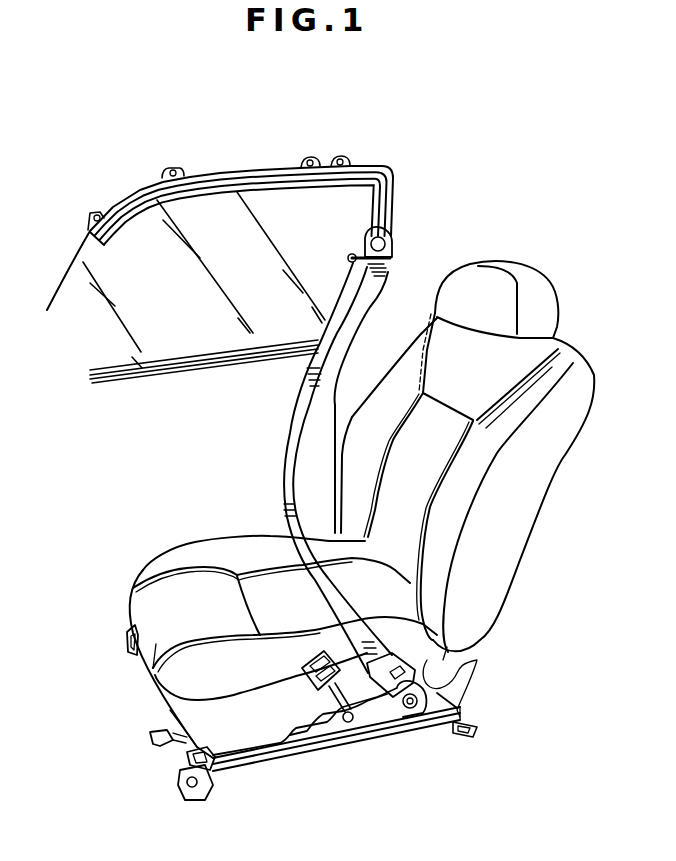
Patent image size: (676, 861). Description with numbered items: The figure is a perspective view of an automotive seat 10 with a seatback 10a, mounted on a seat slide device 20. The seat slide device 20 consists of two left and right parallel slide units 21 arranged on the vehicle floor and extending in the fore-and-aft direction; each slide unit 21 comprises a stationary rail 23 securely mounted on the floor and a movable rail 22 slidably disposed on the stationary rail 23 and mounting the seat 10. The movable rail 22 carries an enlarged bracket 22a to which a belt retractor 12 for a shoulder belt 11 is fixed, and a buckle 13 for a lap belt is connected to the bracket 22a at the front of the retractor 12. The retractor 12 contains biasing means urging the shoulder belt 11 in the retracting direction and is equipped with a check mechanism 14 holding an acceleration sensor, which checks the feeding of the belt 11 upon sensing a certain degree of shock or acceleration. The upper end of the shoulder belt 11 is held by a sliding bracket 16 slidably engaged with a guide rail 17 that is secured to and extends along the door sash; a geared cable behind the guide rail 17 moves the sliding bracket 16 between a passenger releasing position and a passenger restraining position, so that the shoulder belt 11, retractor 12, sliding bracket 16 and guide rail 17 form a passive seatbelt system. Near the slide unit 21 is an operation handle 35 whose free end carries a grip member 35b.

The guide rail 17 is at (246, 164).
The sliding bracket 16 is at (414, 228).
The shoulder belt 11 is at (278, 464).
The automotive seat 10 is at (140, 557).
The seatback 10a is at (518, 550).
The belt retractor 12 is at (414, 661).
The buckle 13 is at (323, 693).
The check mechanism 14 is at (402, 716).
The enlarged bracket 22a is at (375, 722).
The movable rail 22 is at (333, 760).
The seat slide device 20 is at (268, 772).
The slide unit 21 is at (116, 659).
The stationary rail 23 is at (200, 798).
The operation handle 35 is at (150, 748).
The grip member 35b is at (180, 738).